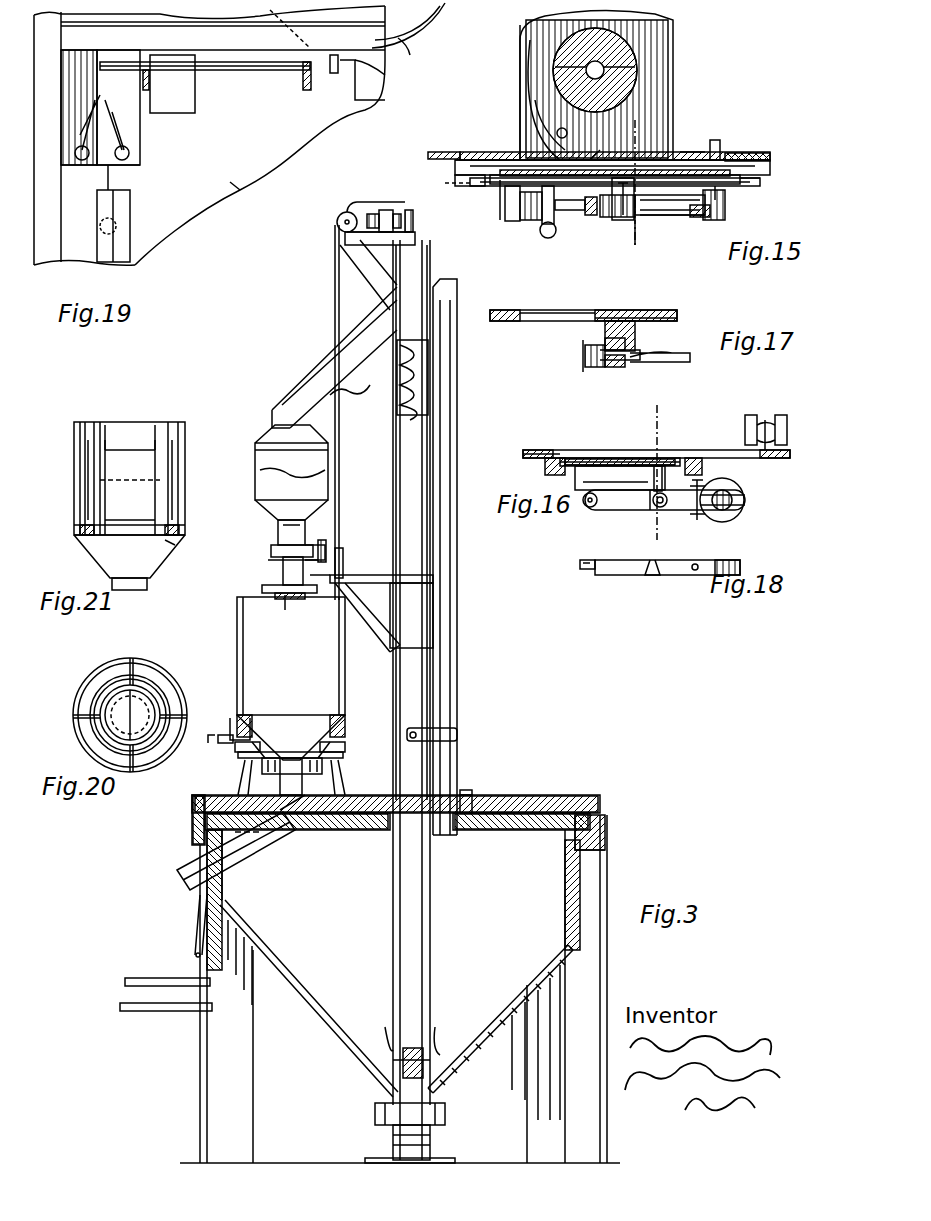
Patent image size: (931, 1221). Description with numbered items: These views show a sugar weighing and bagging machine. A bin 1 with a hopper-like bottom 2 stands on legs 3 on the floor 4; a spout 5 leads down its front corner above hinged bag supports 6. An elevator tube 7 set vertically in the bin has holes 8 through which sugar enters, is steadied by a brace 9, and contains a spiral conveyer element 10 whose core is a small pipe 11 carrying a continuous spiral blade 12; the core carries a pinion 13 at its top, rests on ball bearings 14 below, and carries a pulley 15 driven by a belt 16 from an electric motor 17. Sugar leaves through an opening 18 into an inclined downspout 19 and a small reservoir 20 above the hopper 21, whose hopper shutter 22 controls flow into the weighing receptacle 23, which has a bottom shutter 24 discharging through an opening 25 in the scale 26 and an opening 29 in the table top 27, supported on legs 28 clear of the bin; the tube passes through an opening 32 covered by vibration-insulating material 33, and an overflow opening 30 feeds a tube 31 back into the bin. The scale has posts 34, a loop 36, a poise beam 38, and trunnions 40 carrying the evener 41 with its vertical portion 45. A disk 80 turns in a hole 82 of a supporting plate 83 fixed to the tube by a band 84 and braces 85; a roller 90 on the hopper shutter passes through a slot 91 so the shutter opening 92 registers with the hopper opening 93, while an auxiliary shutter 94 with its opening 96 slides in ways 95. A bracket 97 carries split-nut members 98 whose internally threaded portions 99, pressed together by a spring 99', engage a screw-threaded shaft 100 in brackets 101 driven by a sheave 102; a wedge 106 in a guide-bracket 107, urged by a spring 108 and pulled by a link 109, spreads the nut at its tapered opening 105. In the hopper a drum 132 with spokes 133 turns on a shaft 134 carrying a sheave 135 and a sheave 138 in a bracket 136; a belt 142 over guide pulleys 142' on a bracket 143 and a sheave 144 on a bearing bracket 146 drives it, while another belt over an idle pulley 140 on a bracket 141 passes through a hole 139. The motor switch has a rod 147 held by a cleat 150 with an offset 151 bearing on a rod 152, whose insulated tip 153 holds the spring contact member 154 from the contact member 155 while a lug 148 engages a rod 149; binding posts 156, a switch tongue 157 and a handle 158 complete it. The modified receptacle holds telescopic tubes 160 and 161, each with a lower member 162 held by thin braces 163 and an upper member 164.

In FIG. 3, the bin 1 is at (393, 890).
In FIG. 3, the hopper-like bottom 2 is at (490, 1022).
In FIG. 3, the legs 3 is at (530, 1112).
In FIG. 3, the floor 4 is at (310, 1160).
In FIG. 3, the spout 5 is at (180, 862).
In FIG. 3, the hinged bag supports 6 is at (155, 1003).
In FIG. 3, the elevator tube 7 is at (378, 972).
In FIG. 3, the holes 8 is at (410, 1030).
In FIG. 3, the brace 9 is at (510, 835).
In FIG. 3, the spiral conveyer element 10 is at (428, 385).
In FIG. 3, the small pipe 11 is at (440, 1055).
In FIG. 3, the continuous spiral blade 12 is at (435, 402).
In FIG. 15, the pinion 13 is at (425, 158).
In FIG. 3, the pinion 13 is at (417, 222).
In FIG. 3, the ball bearings 14 is at (435, 1143).
In FIG. 3, the pulley 15 is at (447, 1118).
In FIG. 15, the belt 16 is at (637, 248).
In FIG. 16, the electric motor 17 is at (660, 469).
In FIG. 3, the opening 18 is at (397, 318).
In FIG. 15, the inclined downspout 19 is at (440, 182).
In FIG. 3, the inclined downspout 19 is at (315, 358).
In FIG. 3, the small reservoir 20 is at (253, 487).
In FIG. 3, the hopper 21 is at (278, 532).
In FIG. 15, the hopper shutter 22 is at (505, 160).
In FIG. 16, the hopper shutter 22 is at (585, 455).
In FIG. 3, the hopper shutter 22 is at (280, 572).
In FIG. 21, the weighing receptacle 23 is at (70, 505).
In FIG. 20, the weighing receptacle 23 is at (75, 697).
In FIG. 3, the weighing receptacle 23 is at (235, 640).
In FIG. 3, the shutter 24 is at (292, 790).
In FIG. 3, the opening 25 is at (305, 810).
In FIG. 3, the scale 26 is at (340, 788).
In FIG. 3, the table top 27 is at (520, 797).
In FIG. 3, the legs 28 is at (200, 1071).
In FIG. 3, the opening 29 is at (280, 830).
In FIG. 3, the opening 30 is at (445, 290).
In FIG. 3, the tube 31 is at (457, 468).
In FIG. 3, the opening 32 is at (470, 795).
In FIG. 3, the vibration-insulating material 33 is at (465, 793).
In FIG. 3, the posts 34 is at (240, 760).
In FIG. 3, the loop 36 is at (250, 758).
In FIG. 3, the poise beam 38 is at (222, 735).
In FIG. 3, the trunnions 40 is at (235, 752).
In FIG. 3, the evener 41 is at (230, 718).
In FIG. 15, the vertical portion 45 is at (745, 186).
In FIG. 19, the disk 80 is at (440, 22).
In FIG. 15, the hole 82 is at (740, 155).
In FIG. 19, the supporting plate 83 is at (228, 180).
In FIG. 15, the supporting plate 83 is at (443, 152).
In FIG. 16, the supporting plate 83 is at (550, 450).
In FIG. 3, the supporting plate 83 is at (375, 570).
In FIG. 3, the band 84 is at (447, 620).
In FIG. 3, the braces 85 is at (382, 640).
In FIG. 15, the roller 90 is at (720, 140).
In FIG. 15, the slot 91 is at (695, 150).
In FIG. 15, the opening 92 is at (615, 150).
In FIG. 16, the opening 92 is at (625, 455).
In FIG. 19, the hopper opening 93 is at (155, 14).
In FIG. 15, the hopper opening 93 is at (600, 150).
In FIG. 15, the auxiliary shutter 94 is at (512, 185).
In FIG. 17, the auxiliary shutter 94 is at (660, 310).
In FIG. 16, the auxiliary shutter 94 is at (608, 462).
In FIG. 16, the ways 95 is at (700, 465).
In FIG. 3, the ways 95 is at (325, 590).
In FIG. 15, the opening 96 is at (580, 220).
In FIG. 17, the opening 96 is at (570, 312).
In FIG. 16, the bracket 97 is at (580, 486).
In FIG. 16, the split-nut members 98 is at (622, 510).
In FIG. 18, the split-nut members 98 is at (660, 578).
In FIG. 15, the internally threaded portions 99 is at (670, 220).
In FIG. 16, the internally threaded portions 99 is at (748, 496).
In FIG. 18, the internally threaded portions 99 is at (716, 557).
In FIG. 16, the spring 99' is at (710, 515).
In FIG. 15, the shaft 100 is at (695, 218).
In FIG. 16, the shaft 100 is at (740, 515).
In FIG. 19, the brackets 101 is at (308, 85).
In FIG. 15, the brackets 101 is at (710, 215).
In FIG. 15, the sheave 102 is at (552, 238).
In FIG. 16, the sheave 102 is at (742, 485).
In FIG. 16, the tapered opening 105 is at (650, 512).
In FIG. 18, the tapered opening 105 is at (653, 575).
In FIG. 17, the wedge 106 is at (615, 368).
In FIG. 16, the wedge 106 is at (668, 510).
In FIG. 15, the guide-bracket 107 is at (610, 225).
In FIG. 17, the guide-bracket 107 is at (635, 335).
In FIG. 16, the guide-bracket 107 is at (662, 470).
In FIG. 15, the spring 108 is at (603, 230).
In FIG. 17, the spring 108 is at (588, 365).
In FIG. 15, the link 109 is at (672, 218).
In FIG. 17, the link 109 is at (672, 362).
In FIG. 15, the drum 132 is at (620, 53).
In FIG. 3, the drum 132 is at (270, 550).
In FIG. 15, the spokes 133 is at (640, 65).
In FIG. 21, the spokes 133 is at (210, 560).
In FIG. 3, the spokes 133 is at (272, 560).
In FIG. 15, the shaft 134 is at (587, 80).
In FIG. 3, the shaft 134 is at (310, 548).
In FIG. 3, the sheave 135 is at (330, 545).
In FIG. 3, the bracket 136 is at (348, 553).
In FIG. 15, the sheave 138 is at (520, 52).
In FIG. 3, the sheave 138 is at (318, 595).
In FIG. 19, the hole 139 is at (196, 103).
In FIG. 15, the idle pulley 140 is at (530, 120).
In FIG. 16, the idle pulley 140 is at (752, 415).
In FIG. 3, the idle pulley 140 is at (290, 592).
In FIG. 16, the bracket 141 is at (765, 420).
In FIG. 3, the belt 142 is at (357, 412).
In FIG. 3, the guide pulleys 142' is at (323, 235).
In FIG. 3, the bracket 143 is at (365, 240).
In FIG. 3, the sheave 144 is at (375, 205).
In FIG. 3, the bearing bracket 146 is at (385, 232).
In FIG. 3, the rod 147 is at (400, 215).
In FIG. 19, the lug 148 is at (405, 45).
In FIG. 19, the rod 149 is at (385, 75).
In FIG. 19, the cleat 150 is at (330, 55).
In FIG. 19, the offset 151 is at (360, 98).
In FIG. 15, the offset 151 is at (720, 190).
In FIG. 19, the rod 152 is at (236, 70).
In FIG. 15, the rod 152 is at (505, 175).
In FIG. 19, the insulated tip 153 is at (100, 60).
In FIG. 15, the insulated tip 153 is at (470, 186).
In FIG. 19, the spring contact member 154 is at (70, 165).
In FIG. 19, the contact member 155 is at (132, 100).
In FIG. 19, the binding posts 156 is at (128, 155).
In FIG. 19, the switch tongue 157 is at (115, 178).
In FIG. 19, the handle 158 is at (120, 208).
In FIG. 21, the telescopic tube 160 is at (95, 455).
In FIG. 20, the telescopic tube 160 is at (110, 690).
In FIG. 21, the telescopic tube 161 is at (88, 465).
In FIG. 20, the telescopic tube 161 is at (95, 735).
In FIG. 21, the lower member 162 is at (102, 508).
In FIG. 21, the braces 163 is at (170, 555).
In FIG. 20, the braces 163 is at (150, 700).
In FIG. 21, the upper member 164 is at (160, 432).